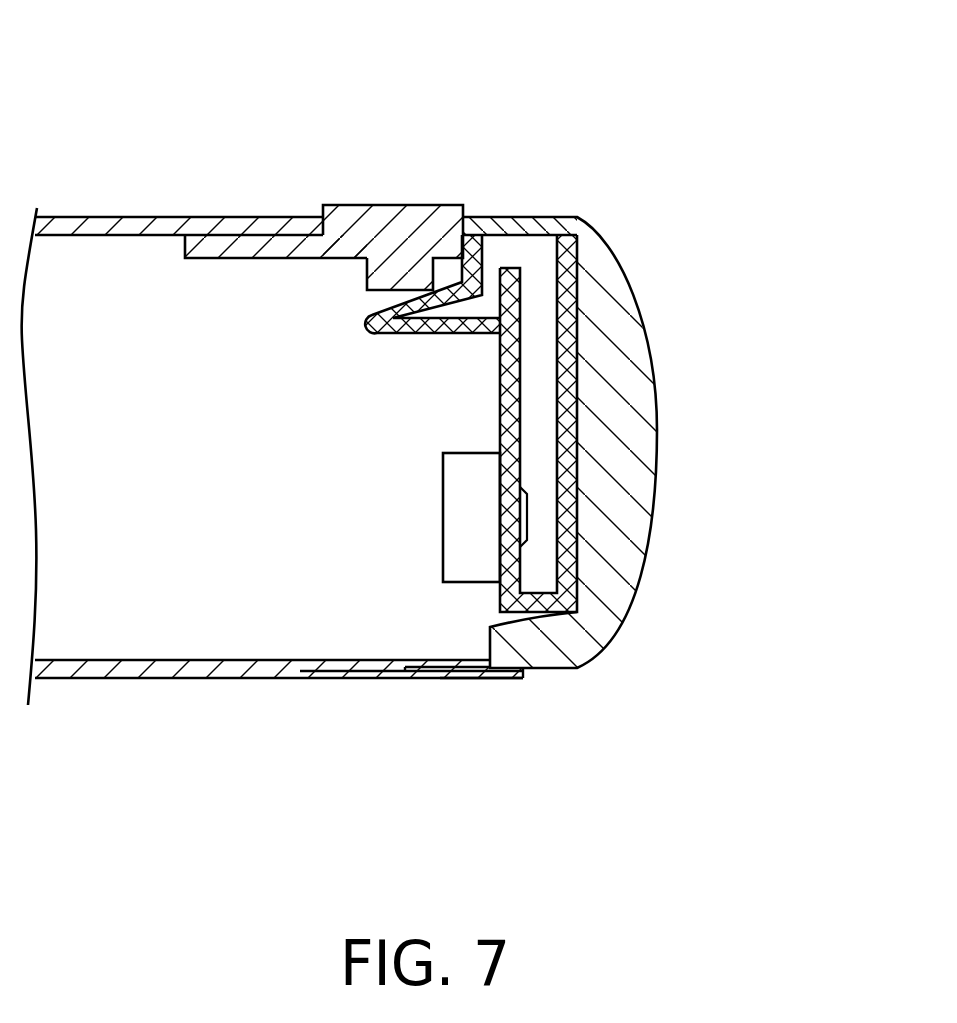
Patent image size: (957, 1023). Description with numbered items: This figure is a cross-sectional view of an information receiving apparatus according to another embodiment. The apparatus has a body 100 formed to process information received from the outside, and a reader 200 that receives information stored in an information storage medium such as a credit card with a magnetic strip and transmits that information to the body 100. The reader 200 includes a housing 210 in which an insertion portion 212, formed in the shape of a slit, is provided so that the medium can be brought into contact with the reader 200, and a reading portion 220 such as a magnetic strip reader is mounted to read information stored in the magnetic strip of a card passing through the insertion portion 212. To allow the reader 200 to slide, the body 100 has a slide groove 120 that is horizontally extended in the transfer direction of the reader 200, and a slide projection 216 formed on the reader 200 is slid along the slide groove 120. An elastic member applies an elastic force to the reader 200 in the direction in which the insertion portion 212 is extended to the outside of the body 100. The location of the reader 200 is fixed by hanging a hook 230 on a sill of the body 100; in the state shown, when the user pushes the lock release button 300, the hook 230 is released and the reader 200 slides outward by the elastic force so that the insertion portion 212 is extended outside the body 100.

The body 100 is at (123, 210).
The slide groove 120 is at (420, 673).
The reader 200 is at (609, 475).
The cover housing 210 is at (637, 454).
The insertion portion 212 is at (547, 508).
The slide projection 216 is at (463, 680).
The reading portion 220 is at (478, 550).
The hook 230 is at (440, 290).
The lock release button 300 is at (392, 222).